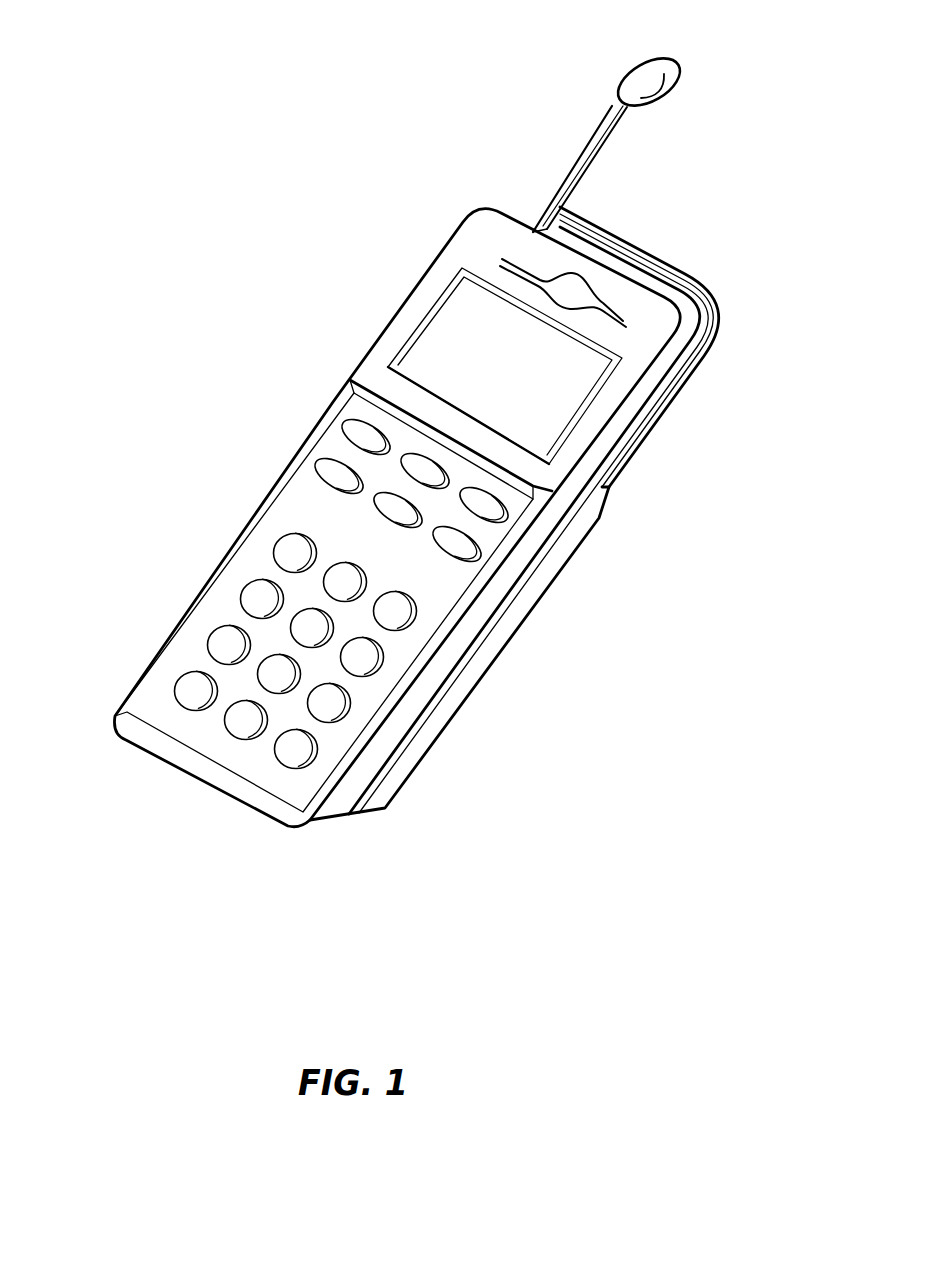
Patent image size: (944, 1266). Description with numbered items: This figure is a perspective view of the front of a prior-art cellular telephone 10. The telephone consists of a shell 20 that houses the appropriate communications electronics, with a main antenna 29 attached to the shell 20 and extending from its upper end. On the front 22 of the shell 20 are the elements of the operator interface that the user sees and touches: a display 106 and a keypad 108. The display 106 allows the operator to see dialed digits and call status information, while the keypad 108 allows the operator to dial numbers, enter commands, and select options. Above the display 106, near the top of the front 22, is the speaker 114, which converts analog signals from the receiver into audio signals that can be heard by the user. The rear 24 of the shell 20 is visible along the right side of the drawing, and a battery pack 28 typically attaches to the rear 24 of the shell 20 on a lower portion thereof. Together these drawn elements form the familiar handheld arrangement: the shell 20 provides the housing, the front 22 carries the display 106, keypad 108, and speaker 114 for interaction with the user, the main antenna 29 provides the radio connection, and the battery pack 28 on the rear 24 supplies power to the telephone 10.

The cellular telephone 10 is at (197, 192).
The shell 20 is at (143, 662).
The front 22 is at (347, 455).
The rear 24 is at (677, 388).
The battery pack 28 is at (457, 685).
The main antenna 29 is at (645, 81).
The display 106 is at (450, 352).
The keypad 108 is at (268, 637).
The speaker 114 is at (550, 287).